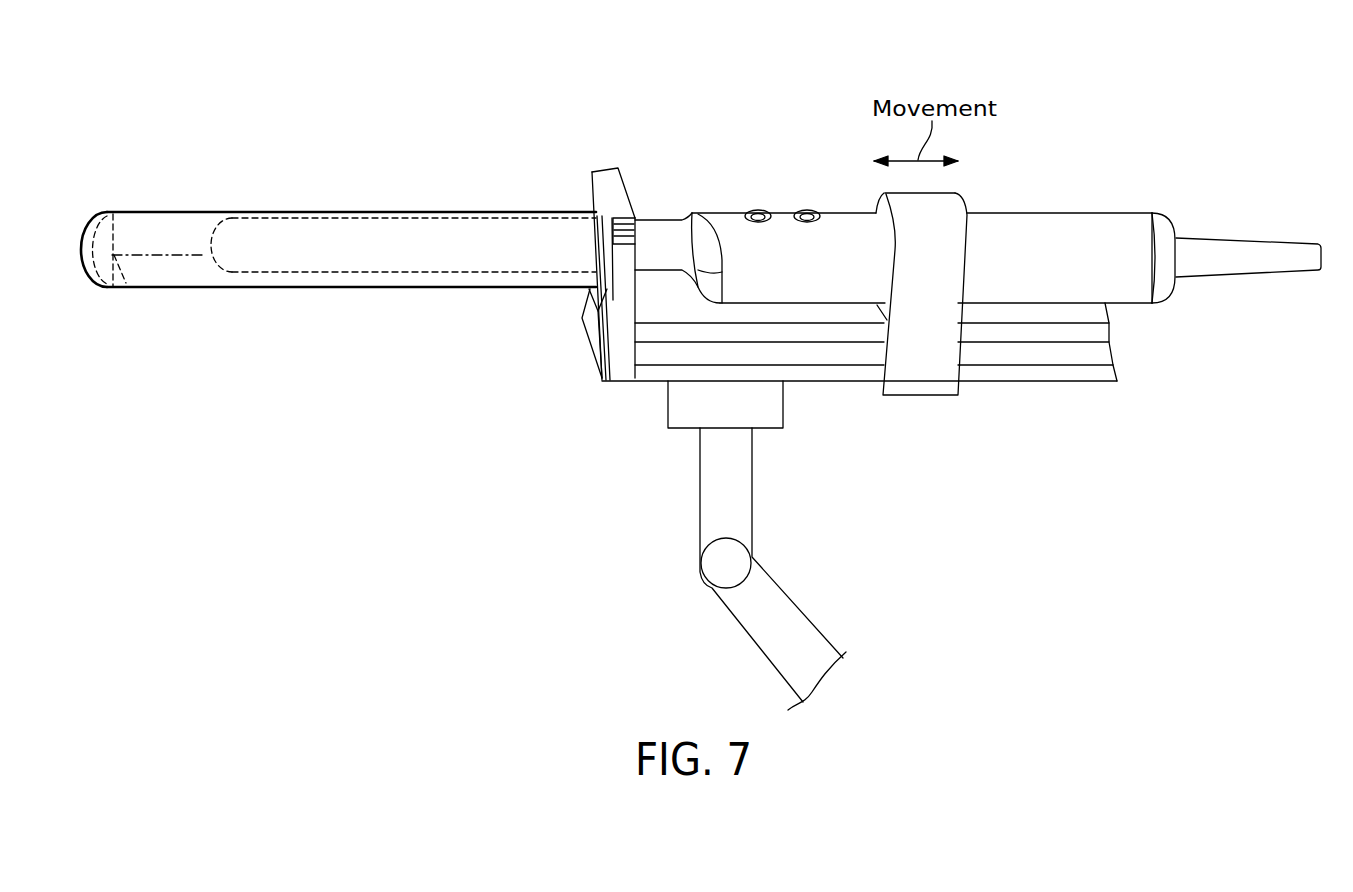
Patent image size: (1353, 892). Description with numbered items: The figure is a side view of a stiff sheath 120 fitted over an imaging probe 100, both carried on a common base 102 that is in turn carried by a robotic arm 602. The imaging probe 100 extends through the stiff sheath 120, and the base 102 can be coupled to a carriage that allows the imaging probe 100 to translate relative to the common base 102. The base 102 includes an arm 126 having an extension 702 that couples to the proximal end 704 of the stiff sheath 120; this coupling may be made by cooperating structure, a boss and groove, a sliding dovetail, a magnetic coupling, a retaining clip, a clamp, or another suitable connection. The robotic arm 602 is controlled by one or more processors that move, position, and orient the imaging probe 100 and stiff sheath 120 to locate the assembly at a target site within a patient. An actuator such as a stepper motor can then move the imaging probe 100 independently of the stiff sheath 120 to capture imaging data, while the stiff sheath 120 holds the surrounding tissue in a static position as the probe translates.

The imaging probe 100 is at (388, 240).
The stiff sheath 120 is at (180, 211).
The base 102 is at (973, 383).
The arm 126 is at (616, 374).
The robotic arm 602 is at (756, 501).
The extension 702 is at (598, 340).
The proximal end 704 is at (611, 180).